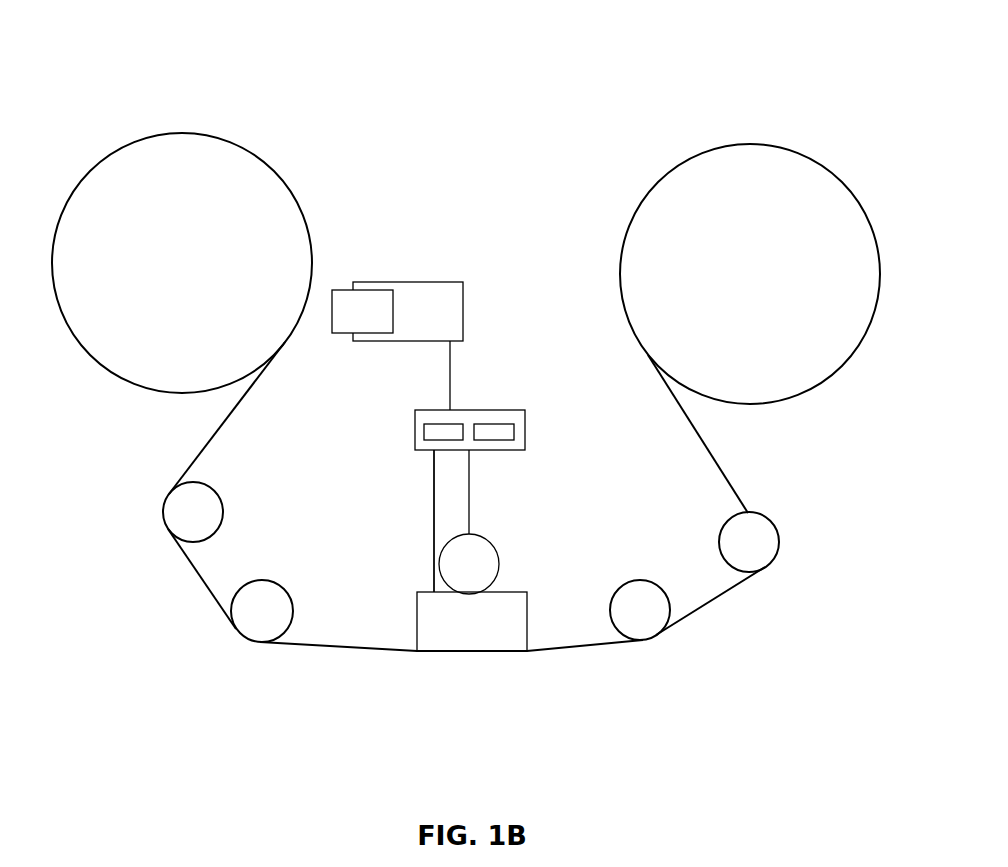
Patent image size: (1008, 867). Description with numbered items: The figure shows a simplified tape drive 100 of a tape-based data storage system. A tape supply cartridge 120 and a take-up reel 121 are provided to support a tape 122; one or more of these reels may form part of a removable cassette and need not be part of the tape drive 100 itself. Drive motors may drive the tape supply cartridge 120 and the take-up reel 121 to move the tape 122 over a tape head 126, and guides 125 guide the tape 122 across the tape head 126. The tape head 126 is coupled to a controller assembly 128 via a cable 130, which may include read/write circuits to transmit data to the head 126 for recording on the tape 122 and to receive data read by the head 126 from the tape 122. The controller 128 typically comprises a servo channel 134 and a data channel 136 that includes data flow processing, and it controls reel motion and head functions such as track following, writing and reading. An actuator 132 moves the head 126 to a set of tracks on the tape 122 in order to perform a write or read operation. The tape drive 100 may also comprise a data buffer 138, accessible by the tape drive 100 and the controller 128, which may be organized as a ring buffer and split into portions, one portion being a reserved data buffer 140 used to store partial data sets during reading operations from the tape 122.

The tape drive 100 is at (508, 130).
The tape supply cartridge 120 is at (300, 210).
The take-up reel 121 is at (802, 393).
The tape 122 is at (343, 647).
The guides 125 is at (262, 580).
The tape head 126 is at (527, 620).
The controller assembly 128 is at (467, 410).
The cable 130 is at (433, 561).
The actuator 132 is at (488, 543).
The servo channel 134 is at (505, 423).
The data channel 136 is at (435, 423).
The data buffer 138 is at (415, 282).
The reserved data buffer 140 is at (362, 311).